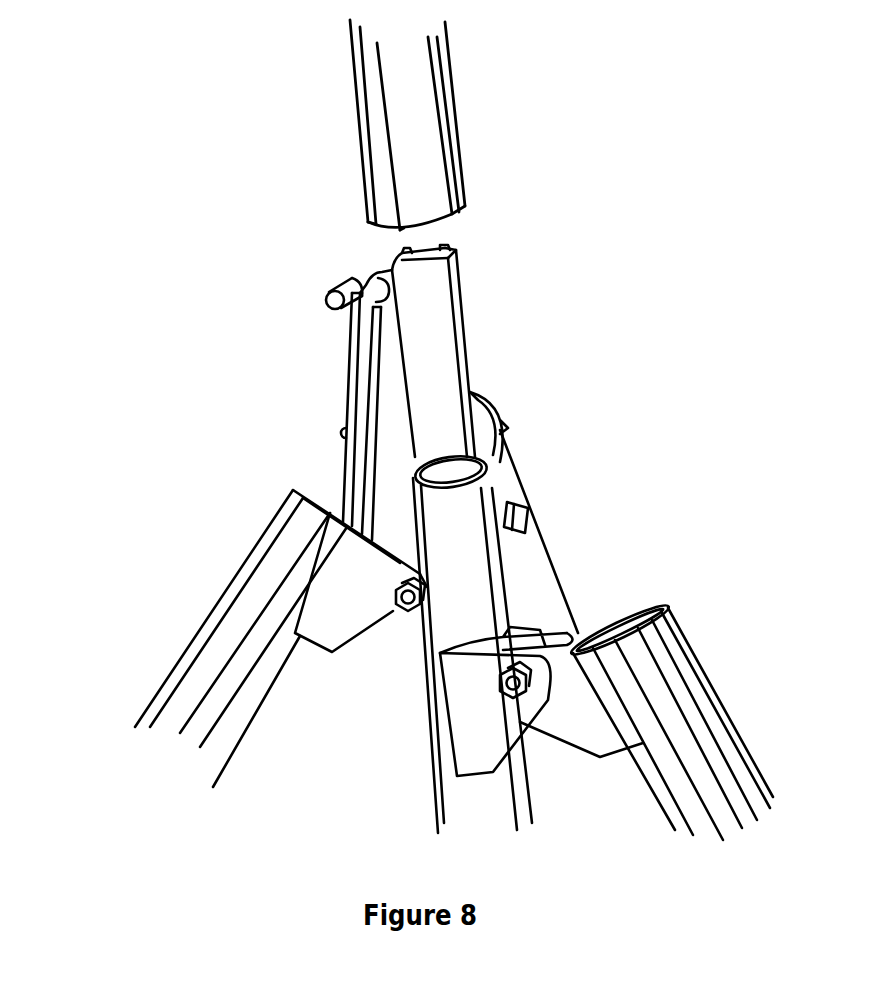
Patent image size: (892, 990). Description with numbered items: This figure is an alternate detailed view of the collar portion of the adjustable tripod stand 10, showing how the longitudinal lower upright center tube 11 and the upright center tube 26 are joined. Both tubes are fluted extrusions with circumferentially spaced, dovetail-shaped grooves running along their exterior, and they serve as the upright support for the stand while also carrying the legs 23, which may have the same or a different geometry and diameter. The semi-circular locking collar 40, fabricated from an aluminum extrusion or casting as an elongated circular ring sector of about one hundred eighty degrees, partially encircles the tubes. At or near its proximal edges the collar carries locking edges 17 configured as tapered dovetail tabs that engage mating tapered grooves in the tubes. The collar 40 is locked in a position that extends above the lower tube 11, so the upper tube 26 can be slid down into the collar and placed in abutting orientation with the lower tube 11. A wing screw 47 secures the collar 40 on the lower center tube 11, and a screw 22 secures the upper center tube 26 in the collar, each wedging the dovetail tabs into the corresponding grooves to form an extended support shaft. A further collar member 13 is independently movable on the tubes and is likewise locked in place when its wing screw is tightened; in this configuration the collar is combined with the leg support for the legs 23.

The adjustable tripod stand 10 is at (108, 300).
The lower upright center tube 11 is at (430, 753).
The collar member 13 is at (303, 633).
The locking edges 17 is at (455, 275).
The screw 22 is at (333, 288).
The legs 23 is at (213, 613).
The upright center tube 26 is at (463, 155).
The semi-circular locking collar 40 is at (435, 370).
The wing screw 47 is at (340, 425).